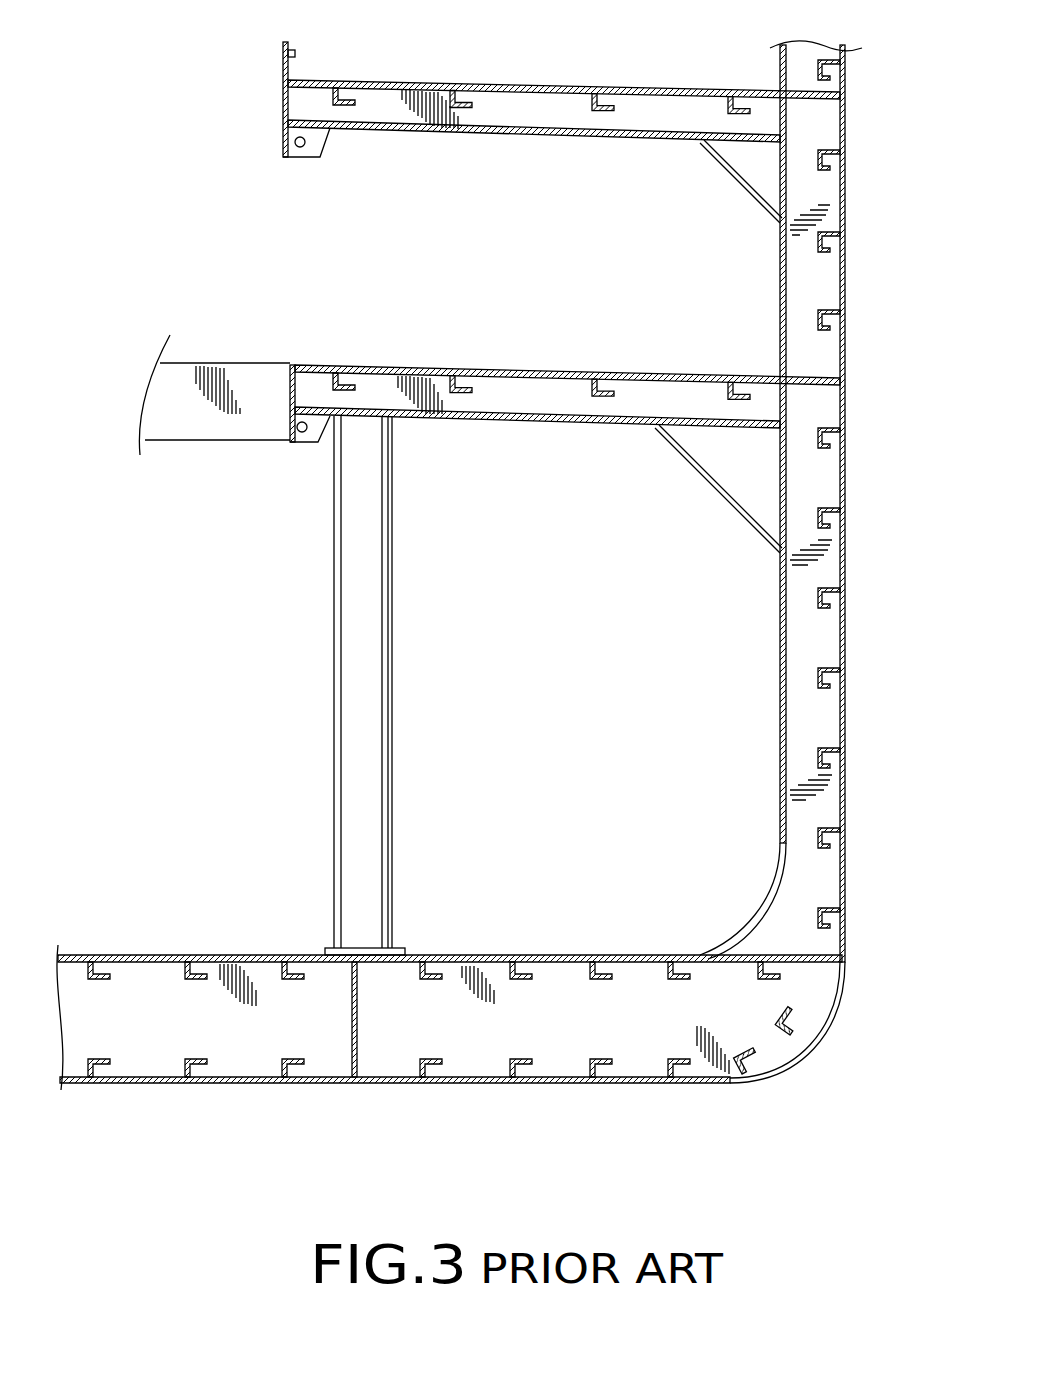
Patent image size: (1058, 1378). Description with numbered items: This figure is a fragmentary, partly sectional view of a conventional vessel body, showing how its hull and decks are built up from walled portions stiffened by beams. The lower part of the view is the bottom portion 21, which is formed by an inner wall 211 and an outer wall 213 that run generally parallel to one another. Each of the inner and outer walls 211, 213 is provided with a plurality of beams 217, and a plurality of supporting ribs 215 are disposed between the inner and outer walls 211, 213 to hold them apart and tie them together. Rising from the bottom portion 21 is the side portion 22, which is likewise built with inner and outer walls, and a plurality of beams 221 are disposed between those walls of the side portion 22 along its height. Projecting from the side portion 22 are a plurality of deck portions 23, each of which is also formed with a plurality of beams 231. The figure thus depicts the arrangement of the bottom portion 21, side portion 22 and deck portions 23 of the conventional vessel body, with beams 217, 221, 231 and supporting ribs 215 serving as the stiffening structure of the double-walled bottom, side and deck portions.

The bottom portion 21 is at (137, 957).
The side portion 22 is at (846, 472).
The deck portion 23 is at (565, 85).
The inner wall 211 is at (632, 955).
The outer wall 213 is at (455, 1085).
The supporting rib 215 is at (352, 1020).
The beam 217 is at (597, 1073).
The beam 221 is at (831, 668).
The beam 231 is at (615, 390).